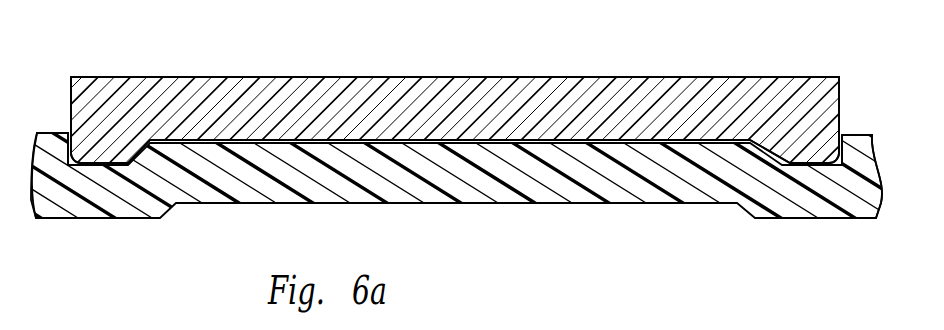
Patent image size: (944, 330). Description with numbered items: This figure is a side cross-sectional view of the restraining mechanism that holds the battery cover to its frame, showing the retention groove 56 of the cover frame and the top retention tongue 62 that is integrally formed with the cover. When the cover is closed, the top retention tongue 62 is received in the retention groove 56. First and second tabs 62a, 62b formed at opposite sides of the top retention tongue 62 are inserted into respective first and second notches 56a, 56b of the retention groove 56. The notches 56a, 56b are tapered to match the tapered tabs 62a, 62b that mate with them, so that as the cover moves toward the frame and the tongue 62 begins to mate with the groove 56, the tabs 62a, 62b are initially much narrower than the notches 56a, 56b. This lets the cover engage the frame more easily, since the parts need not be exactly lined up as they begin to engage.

The retention groove 56 is at (462, 143).
The first notch 56a is at (843, 165).
The second notch 56b is at (70, 163).
The top retention tongue 62 is at (497, 93).
The first tab 62a is at (825, 110).
The second tab 62b is at (88, 112).